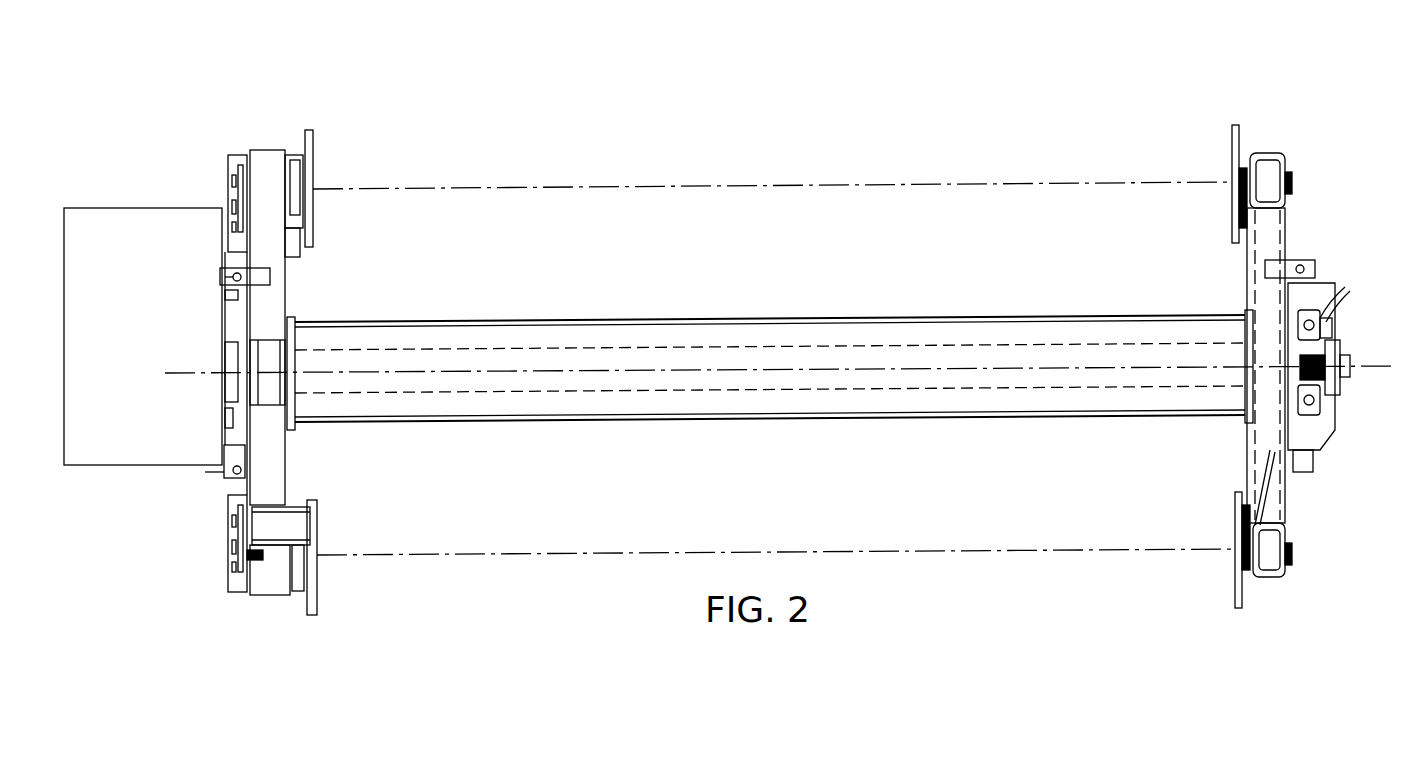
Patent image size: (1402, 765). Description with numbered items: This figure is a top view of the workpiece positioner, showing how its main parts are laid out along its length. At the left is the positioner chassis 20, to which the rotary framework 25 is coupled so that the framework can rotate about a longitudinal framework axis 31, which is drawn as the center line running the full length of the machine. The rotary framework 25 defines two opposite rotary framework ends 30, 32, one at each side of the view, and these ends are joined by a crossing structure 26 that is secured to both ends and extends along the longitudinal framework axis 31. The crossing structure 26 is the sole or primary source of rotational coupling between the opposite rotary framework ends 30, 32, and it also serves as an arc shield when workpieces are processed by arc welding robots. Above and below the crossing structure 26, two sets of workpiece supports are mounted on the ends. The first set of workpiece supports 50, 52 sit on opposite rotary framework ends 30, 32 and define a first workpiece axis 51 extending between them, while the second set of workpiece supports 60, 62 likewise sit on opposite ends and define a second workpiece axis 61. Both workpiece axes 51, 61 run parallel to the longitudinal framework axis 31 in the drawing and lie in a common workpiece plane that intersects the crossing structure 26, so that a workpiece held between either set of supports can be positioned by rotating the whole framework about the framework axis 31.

The positioner chassis 20 is at (90, 207).
The rotary framework 25 is at (268, 148).
The crossing structure 26 is at (770, 319).
The rotary framework end 30 is at (146, 67).
The longitudinal framework axis 31 is at (165, 373).
The rotary framework end 32 is at (1322, 327).
The first workpiece support 50 is at (320, 600).
The first workpiece axis 51 is at (955, 553).
The first workpiece support 52 is at (1235, 580).
The second workpiece support 60 is at (314, 152).
The second workpiece axis 61 is at (722, 186).
The second workpiece support 62 is at (1232, 133).